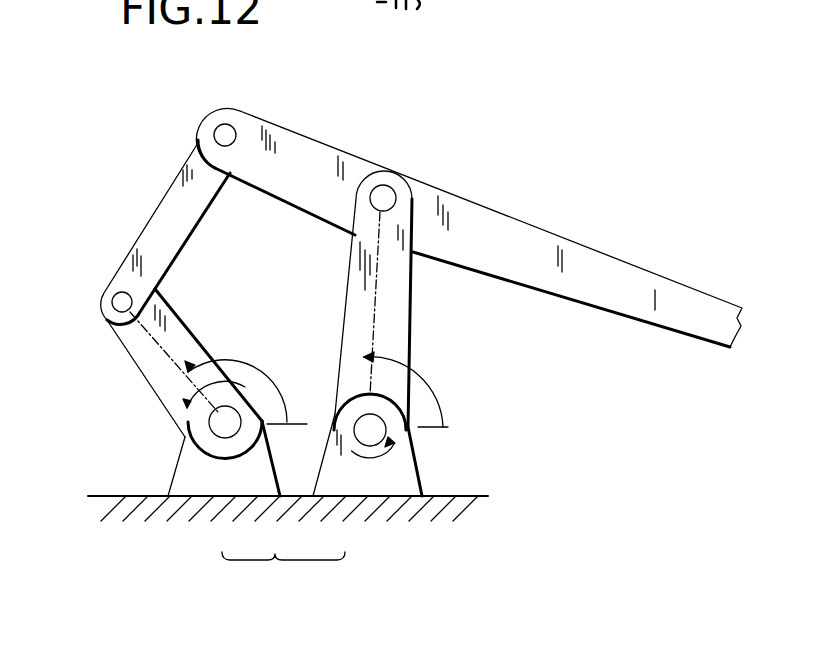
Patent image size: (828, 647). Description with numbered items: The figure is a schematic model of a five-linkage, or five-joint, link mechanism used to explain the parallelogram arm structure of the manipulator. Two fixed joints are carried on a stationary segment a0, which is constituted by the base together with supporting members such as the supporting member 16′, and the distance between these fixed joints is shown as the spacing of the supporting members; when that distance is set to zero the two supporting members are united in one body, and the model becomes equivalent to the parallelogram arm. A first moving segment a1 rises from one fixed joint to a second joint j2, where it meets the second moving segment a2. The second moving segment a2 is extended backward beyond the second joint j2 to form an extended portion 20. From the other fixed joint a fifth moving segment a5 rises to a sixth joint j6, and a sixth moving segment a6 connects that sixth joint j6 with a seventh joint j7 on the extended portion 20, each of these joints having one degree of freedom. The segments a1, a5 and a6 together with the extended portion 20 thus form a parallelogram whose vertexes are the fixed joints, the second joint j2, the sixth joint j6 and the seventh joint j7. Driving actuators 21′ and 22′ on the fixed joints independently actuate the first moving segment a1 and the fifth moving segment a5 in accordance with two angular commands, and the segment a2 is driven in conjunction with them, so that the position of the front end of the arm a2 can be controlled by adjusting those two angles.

The extended portion 20 is at (330, 147).
The second moving segment a2 is at (489, 216).
The sixth moving segment a6 is at (160, 213).
The fifth moving segment a5 is at (150, 372).
The first moving segment a1 is at (397, 323).
The stationary segment a0 is at (283, 574).
The seventh joint j7 is at (222, 133).
The second joint j2 is at (386, 196).
The sixth joint j6 is at (120, 302).
The driving actuator 22′ is at (213, 434).
The driving actuator 21′ is at (372, 446).
The supporting member 16′ is at (228, 478).